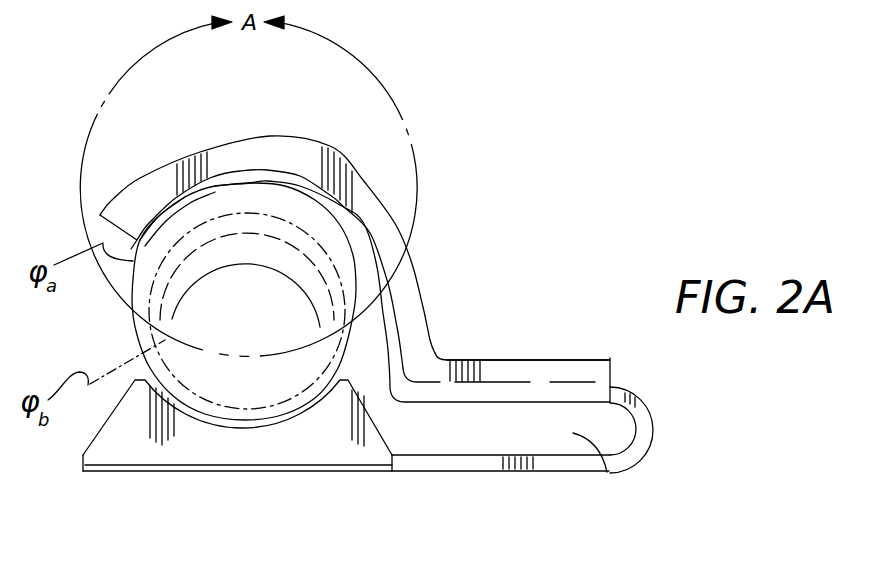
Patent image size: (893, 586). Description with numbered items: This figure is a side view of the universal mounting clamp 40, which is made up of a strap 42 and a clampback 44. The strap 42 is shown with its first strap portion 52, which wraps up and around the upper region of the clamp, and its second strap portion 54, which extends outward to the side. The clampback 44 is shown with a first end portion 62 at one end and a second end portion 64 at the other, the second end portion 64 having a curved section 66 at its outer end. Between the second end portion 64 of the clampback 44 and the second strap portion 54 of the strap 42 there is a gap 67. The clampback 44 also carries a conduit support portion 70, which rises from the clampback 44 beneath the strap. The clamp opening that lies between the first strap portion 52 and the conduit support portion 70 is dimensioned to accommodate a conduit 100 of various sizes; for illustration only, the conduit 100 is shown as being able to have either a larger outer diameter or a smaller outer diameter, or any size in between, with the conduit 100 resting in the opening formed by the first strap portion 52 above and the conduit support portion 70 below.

The conduit 100 is at (104, 333).
The universal mounting clamp 40 is at (486, 264).
The strap 42 is at (333, 167).
The first strap portion 52 is at (215, 158).
The second strap portion 54 is at (512, 367).
The curved section 66 is at (650, 432).
The gap 67 is at (610, 472).
The second end portion 64 is at (494, 473).
The clampback 44 is at (338, 473).
The conduit support portion 70 is at (223, 450).
The first end portion 62 is at (76, 460).